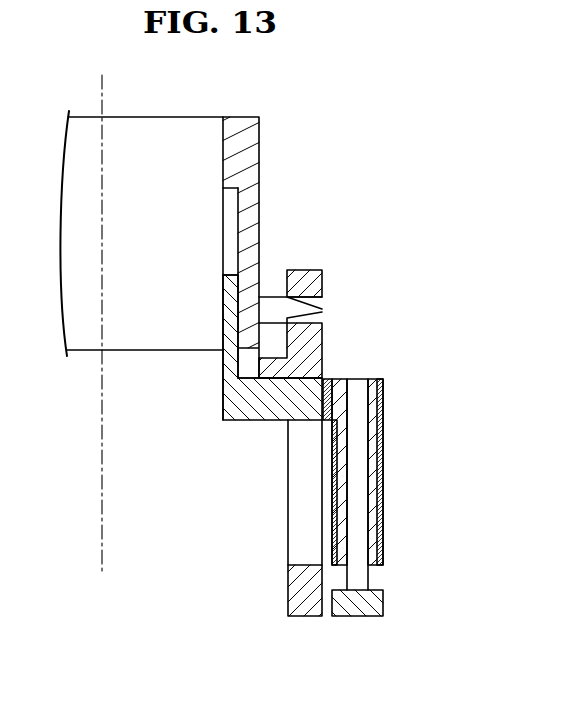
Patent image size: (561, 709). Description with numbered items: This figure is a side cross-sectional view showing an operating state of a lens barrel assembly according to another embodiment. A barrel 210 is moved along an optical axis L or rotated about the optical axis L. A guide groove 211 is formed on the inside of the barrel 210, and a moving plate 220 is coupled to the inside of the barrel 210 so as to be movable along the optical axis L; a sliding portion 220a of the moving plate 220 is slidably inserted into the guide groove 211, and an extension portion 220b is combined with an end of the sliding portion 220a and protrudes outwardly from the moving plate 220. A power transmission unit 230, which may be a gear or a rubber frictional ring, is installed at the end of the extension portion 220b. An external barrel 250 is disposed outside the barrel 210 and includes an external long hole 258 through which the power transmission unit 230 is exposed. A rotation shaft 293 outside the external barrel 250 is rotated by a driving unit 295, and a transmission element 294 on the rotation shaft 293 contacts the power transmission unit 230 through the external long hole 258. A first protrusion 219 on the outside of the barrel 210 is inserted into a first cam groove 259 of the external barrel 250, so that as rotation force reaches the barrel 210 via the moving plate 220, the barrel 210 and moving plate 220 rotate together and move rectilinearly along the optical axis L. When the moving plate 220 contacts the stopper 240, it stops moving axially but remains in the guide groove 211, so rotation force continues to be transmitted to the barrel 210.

The barrel 210 is at (239, 122).
The guide groove 211 is at (242, 197).
The first protrusion 219 is at (278, 308).
The moving plate 220 is at (176, 470).
The sliding portion 220a is at (228, 364).
The extension portion 220b is at (263, 407).
The power transmission unit 230 is at (325, 392).
The stopper 240 is at (282, 366).
The external barrel 250 is at (322, 287).
The external long hole 258 is at (303, 563).
The first cam groove 259 is at (292, 317).
The rotation shaft 293 is at (358, 453).
The transmission element 294 is at (383, 390).
The driving unit 295 is at (375, 603).
The optical axis L is at (103, 529).